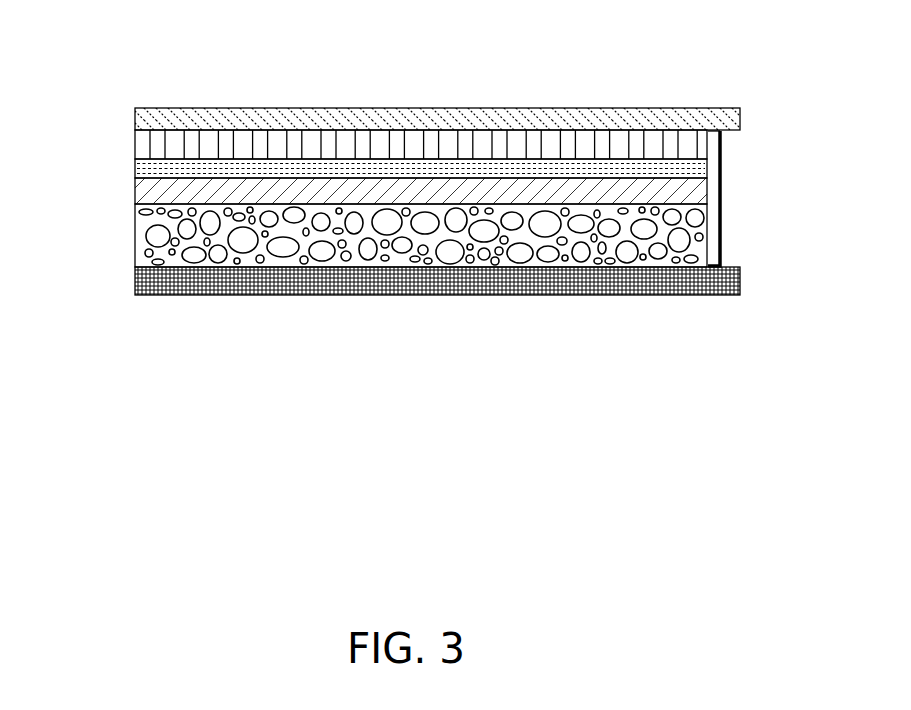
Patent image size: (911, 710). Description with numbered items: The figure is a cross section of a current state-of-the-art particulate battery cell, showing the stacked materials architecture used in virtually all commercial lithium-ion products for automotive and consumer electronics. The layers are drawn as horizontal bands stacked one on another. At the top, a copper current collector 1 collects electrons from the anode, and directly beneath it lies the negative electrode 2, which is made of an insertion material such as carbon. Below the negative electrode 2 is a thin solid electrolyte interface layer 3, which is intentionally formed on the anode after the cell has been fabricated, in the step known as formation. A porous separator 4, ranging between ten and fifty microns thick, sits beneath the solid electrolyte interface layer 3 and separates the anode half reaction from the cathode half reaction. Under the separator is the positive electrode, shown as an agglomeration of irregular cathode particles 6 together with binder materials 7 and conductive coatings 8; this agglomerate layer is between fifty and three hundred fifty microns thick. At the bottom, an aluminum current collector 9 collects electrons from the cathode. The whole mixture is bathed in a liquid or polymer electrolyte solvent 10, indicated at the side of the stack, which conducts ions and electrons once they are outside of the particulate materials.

The copper current collector 1 is at (207, 108).
The negative electrode 2 is at (135, 139).
The solid electrolyte interface layer 3 is at (708, 167).
The porous separator 4 is at (135, 179).
The cathode particles 6 is at (135, 229).
The binder materials 7 is at (425, 235).
The conductive coatings 8 is at (421, 236).
The aluminum current collector 9 is at (742, 282).
The liquid or polymer electrolyte solvent 10 is at (722, 198).